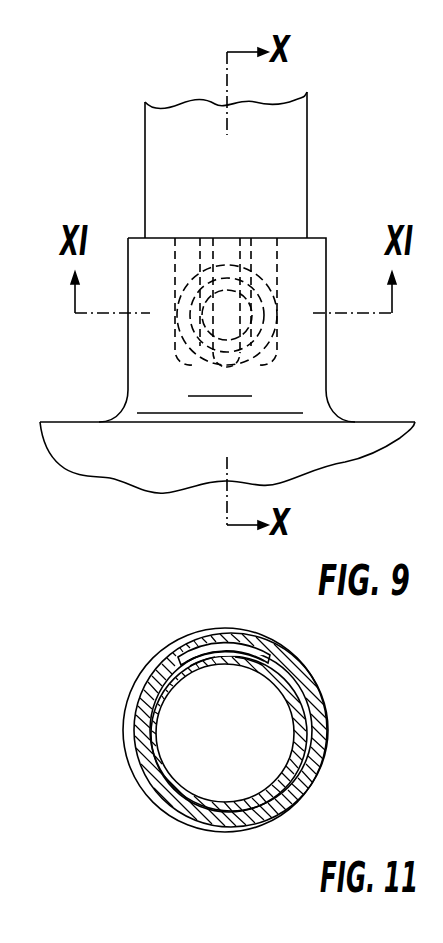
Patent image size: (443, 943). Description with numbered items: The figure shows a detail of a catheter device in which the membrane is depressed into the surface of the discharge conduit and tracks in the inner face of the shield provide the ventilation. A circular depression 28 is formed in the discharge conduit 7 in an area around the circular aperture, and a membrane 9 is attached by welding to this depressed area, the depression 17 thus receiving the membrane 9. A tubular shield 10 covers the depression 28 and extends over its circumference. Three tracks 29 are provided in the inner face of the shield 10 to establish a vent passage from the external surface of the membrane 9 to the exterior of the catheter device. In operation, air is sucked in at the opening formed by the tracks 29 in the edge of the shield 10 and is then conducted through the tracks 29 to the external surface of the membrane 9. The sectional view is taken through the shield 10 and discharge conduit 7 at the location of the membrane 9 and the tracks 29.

In FIG. 9, the discharge conduit 7 is at (292, 153).
In FIG. 11, the discharge conduit 7 is at (180, 798).
In FIG. 9, the membrane 9 is at (263, 318).
In FIG. 11, the membrane 9 is at (206, 660).
In FIG. 9, the tubular shield 10 is at (310, 348).
In FIG. 11, the tubular shield 10 is at (300, 680).
In FIG. 11, the depression 17 is at (258, 664).
In FIG. 9, the circular depression 28 is at (241, 356).
In FIG. 9, the tracks 29 is at (227, 248).
In FIG. 11, the tracks 29 is at (180, 657).